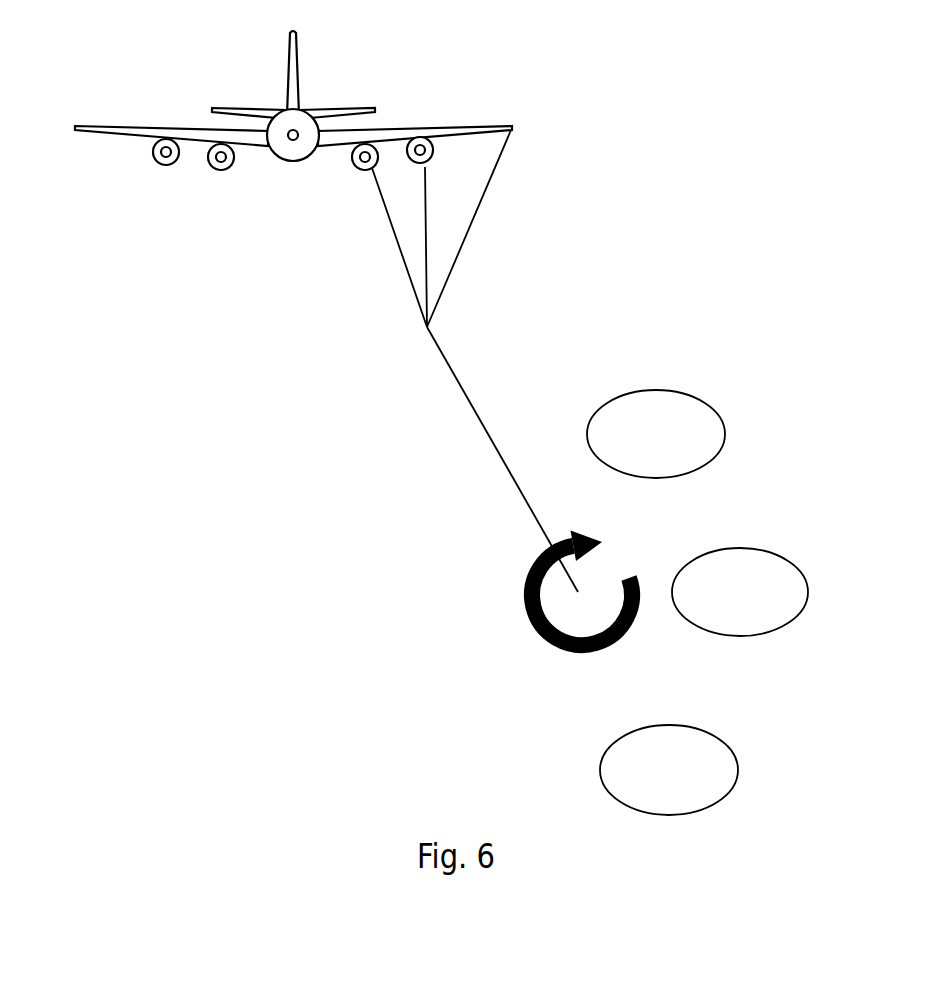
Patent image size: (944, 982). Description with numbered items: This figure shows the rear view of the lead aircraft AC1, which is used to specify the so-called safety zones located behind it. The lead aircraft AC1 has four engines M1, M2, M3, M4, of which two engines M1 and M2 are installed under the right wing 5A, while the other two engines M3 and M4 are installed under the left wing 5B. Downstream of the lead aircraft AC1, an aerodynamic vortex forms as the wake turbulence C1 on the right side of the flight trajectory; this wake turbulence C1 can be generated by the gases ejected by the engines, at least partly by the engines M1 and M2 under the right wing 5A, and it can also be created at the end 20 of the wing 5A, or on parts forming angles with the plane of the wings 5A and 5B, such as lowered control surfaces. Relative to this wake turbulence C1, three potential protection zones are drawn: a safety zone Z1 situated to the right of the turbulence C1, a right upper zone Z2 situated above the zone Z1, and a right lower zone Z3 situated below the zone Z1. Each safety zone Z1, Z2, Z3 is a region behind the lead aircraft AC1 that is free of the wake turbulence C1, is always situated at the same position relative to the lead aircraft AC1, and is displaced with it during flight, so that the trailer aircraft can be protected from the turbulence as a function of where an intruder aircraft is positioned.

The end of a wing 20 is at (342, 129).
The lead aircraft AC1 is at (273, 154).
The right wing 5A is at (403, 130).
The left wing 5B is at (185, 130).
The engine M1 is at (431, 161).
The engine M2 is at (353, 168).
The engine M3 is at (208, 166).
The engine M4 is at (151, 163).
The wake turbulence C1 is at (552, 643).
The safety zone Z1 is at (745, 548).
The right upper zone Z2 is at (677, 389).
The right lower zone Z3 is at (700, 726).